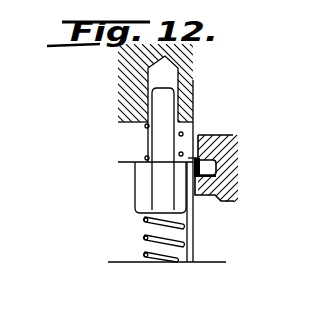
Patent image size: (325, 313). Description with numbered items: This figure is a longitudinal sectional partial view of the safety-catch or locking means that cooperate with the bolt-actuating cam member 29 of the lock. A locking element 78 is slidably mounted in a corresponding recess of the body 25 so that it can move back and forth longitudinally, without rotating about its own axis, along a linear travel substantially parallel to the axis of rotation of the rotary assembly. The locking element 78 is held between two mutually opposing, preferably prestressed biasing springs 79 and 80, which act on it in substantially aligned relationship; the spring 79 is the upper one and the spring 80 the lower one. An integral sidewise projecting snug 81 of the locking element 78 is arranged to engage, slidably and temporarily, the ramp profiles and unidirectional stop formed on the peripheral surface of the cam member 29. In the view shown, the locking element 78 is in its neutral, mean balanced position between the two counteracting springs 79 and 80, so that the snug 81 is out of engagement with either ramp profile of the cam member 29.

The body 25 is at (135, 82).
The cam member 29 is at (215, 192).
The locking element 78 is at (158, 183).
The spring 79 is at (147, 142).
The spring 80 is at (145, 237).
The snug 81 is at (200, 157).